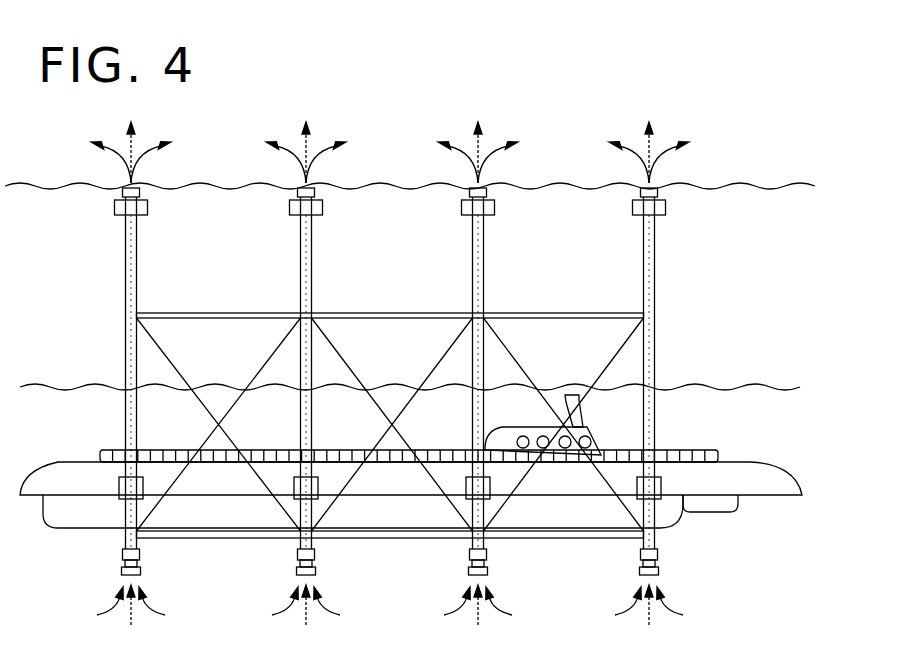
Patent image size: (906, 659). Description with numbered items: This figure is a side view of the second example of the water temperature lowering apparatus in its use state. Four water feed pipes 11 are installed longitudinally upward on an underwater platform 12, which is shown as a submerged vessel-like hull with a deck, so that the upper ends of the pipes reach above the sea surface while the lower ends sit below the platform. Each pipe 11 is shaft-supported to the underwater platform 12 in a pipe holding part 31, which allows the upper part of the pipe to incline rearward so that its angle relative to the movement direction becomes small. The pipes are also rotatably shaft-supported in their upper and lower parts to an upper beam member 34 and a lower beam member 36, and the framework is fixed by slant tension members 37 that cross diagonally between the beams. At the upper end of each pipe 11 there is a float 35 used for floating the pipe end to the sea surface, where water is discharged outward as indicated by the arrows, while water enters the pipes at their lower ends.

The pipe 11 is at (133, 250).
The underwater platform 12 is at (745, 462).
The pipe holding part 31 is at (117, 487).
The beam member 34 is at (180, 313).
The float 35 is at (115, 208).
The beam member 36 is at (248, 541).
The slant tension member 37 is at (150, 340).